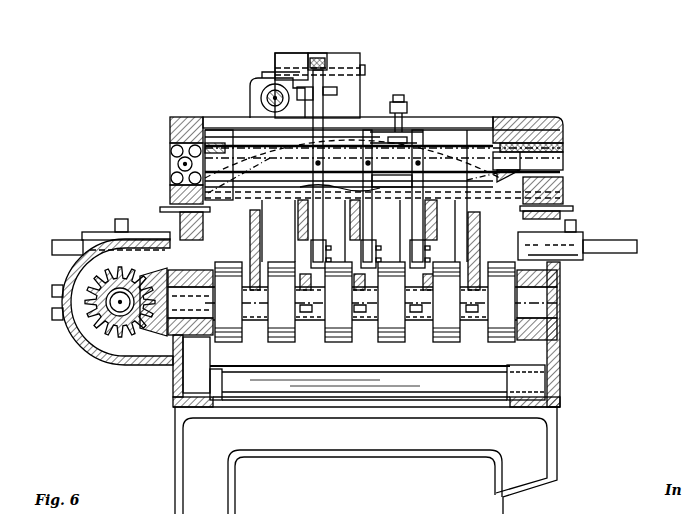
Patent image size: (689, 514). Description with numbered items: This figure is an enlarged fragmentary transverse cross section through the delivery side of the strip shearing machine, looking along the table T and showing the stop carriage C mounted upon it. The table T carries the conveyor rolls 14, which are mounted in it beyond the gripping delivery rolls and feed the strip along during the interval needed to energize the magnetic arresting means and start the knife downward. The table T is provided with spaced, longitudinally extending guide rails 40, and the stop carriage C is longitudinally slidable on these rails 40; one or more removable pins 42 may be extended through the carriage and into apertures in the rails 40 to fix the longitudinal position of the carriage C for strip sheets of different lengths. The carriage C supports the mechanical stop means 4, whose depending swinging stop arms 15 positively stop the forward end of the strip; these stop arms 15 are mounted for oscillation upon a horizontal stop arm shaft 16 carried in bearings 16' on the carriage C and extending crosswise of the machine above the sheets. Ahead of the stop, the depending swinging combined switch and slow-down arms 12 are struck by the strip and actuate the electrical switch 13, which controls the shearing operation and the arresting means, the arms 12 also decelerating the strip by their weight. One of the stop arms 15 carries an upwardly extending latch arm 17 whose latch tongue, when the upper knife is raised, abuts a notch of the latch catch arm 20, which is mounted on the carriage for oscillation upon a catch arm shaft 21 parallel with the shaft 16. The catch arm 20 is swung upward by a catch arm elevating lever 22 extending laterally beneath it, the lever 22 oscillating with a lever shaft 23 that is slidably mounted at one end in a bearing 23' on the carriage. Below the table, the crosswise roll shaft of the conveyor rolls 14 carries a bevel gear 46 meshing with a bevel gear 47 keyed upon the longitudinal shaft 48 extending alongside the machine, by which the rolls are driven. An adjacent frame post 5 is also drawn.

The mechanical stop means 4 is at (403, 117).
The frame post 5 is at (470, 170).
The combined switch and strip slow down arms 12 is at (268, 228).
The electrical switch 13 is at (410, 132).
The conveyor rolls 14 is at (292, 343).
The stop arms 15 is at (303, 186).
The stop arm shaft 16 is at (546, 158).
The bearings 16' is at (367, 153).
The latch arm 17 is at (324, 92).
The latch catch arm 20 is at (320, 55).
The catch arm shaft 21 is at (360, 77).
The catch arm elevating lever 22 is at (300, 85).
The lever shaft 23 is at (260, 95).
The bearing 23' is at (266, 57).
The guide rails 40 is at (568, 196).
The removable pins 42 is at (573, 209).
The bevel gears 46 is at (155, 332).
The bevel gears 47 is at (100, 330).
The longitudinal shaft 48 is at (116, 300).
The stop carriage C is at (522, 117).
The table T is at (172, 397).